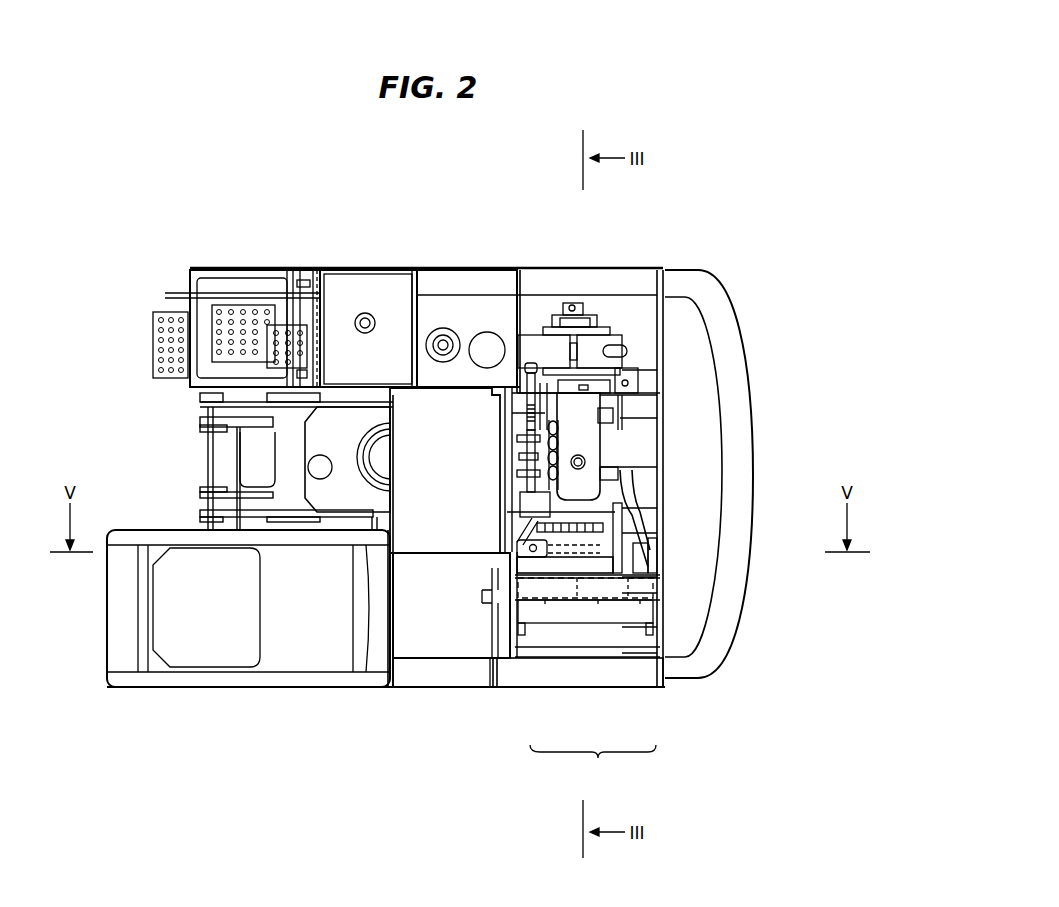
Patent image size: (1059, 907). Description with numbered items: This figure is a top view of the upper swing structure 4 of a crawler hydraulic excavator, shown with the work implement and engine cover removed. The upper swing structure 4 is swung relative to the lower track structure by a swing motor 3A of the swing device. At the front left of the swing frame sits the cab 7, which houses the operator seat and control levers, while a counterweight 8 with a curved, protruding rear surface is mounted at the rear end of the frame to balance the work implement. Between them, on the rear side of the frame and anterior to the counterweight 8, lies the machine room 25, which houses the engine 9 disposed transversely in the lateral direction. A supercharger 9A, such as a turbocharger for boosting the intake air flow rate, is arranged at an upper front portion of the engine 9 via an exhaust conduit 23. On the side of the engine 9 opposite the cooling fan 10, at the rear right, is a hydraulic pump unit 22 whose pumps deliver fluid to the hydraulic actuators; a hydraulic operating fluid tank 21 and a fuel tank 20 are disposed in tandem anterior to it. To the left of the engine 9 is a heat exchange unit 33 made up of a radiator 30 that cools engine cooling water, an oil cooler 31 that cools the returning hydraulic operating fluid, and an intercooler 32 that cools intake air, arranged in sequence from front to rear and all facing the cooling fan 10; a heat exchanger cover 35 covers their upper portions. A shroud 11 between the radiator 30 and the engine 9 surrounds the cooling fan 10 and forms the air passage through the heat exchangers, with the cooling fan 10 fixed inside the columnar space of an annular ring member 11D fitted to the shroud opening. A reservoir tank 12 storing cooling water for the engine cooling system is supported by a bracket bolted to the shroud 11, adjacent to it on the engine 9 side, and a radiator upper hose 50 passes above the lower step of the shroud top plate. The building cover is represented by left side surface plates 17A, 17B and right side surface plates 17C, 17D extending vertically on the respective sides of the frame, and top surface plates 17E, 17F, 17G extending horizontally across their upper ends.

The swing motor 3A is at (380, 447).
The upper swing structure 4 is at (395, 697).
The cab 7 is at (290, 660).
The counterweight 8 is at (700, 483).
The engine 9 is at (582, 440).
The supercharger 9A is at (518, 455).
The cooling fan 10 is at (660, 558).
The shroud 11 is at (518, 563).
The ring member 11D is at (660, 538).
The tank 12 is at (507, 543).
The left side surface plate 17A is at (447, 687).
The left side surface plate 17B is at (512, 687).
The right side surface plate 17C is at (500, 280).
The right side surface plate 17D is at (553, 280).
The top surface plate 17E is at (402, 615).
The top surface plate 17F is at (415, 502).
The top surface plate 17G is at (428, 373).
The fuel tank 20 is at (378, 268).
The hydraulic operating fluid tank 21 is at (445, 290).
The hydraulic pump unit 22 is at (580, 303).
The exhaust conduit 23 is at (523, 427).
The machine room 25 is at (628, 306).
The radiator 30 is at (598, 604).
The oil cooler 31 is at (545, 604).
The intercooler 32 is at (640, 604).
The heat exchange unit 33 is at (593, 765).
The heat exchanger cover 35 is at (660, 590).
The radiator upper hose 50 is at (660, 513).